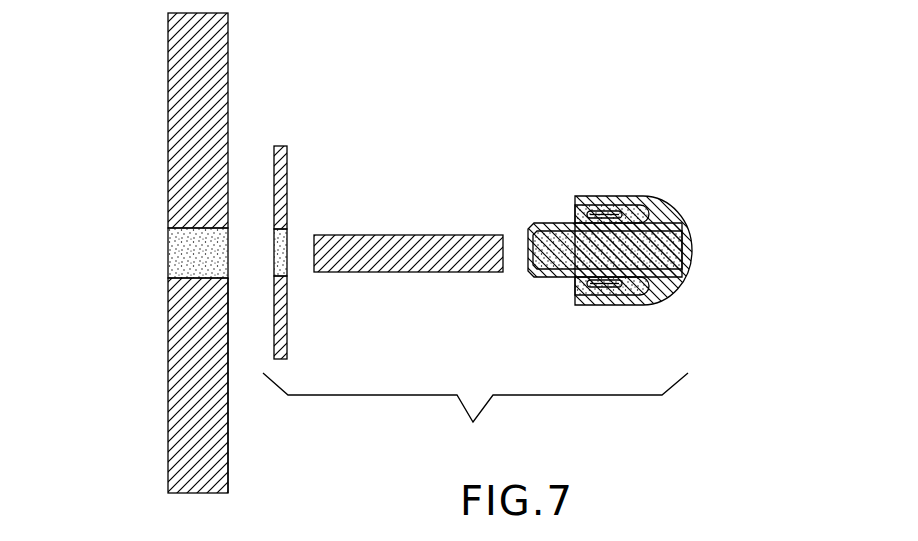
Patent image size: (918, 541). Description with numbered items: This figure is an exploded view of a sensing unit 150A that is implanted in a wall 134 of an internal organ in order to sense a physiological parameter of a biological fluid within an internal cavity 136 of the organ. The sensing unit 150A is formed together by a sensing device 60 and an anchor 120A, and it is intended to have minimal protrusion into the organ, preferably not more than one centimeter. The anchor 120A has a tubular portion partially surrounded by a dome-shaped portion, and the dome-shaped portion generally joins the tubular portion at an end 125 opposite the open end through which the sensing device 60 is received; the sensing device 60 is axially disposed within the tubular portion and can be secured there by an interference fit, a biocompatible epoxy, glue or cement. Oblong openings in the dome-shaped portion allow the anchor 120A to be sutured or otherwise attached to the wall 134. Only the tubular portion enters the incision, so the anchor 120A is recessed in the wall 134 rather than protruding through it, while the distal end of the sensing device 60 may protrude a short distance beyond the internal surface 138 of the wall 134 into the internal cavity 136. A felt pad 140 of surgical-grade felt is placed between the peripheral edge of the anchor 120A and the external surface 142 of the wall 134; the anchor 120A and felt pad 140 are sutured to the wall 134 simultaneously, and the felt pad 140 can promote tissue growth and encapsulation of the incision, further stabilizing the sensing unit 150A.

The sensing device 60 is at (408, 235).
The anchor 120A is at (661, 222).
The end 125 is at (677, 288).
The wall 134 is at (188, 118).
The internal cavity 136 is at (82, 242).
The internal surface 138 is at (168, 357).
The felt pad 140 is at (287, 175).
The external surface 142 is at (228, 445).
The sensing unit 150A is at (475, 417).